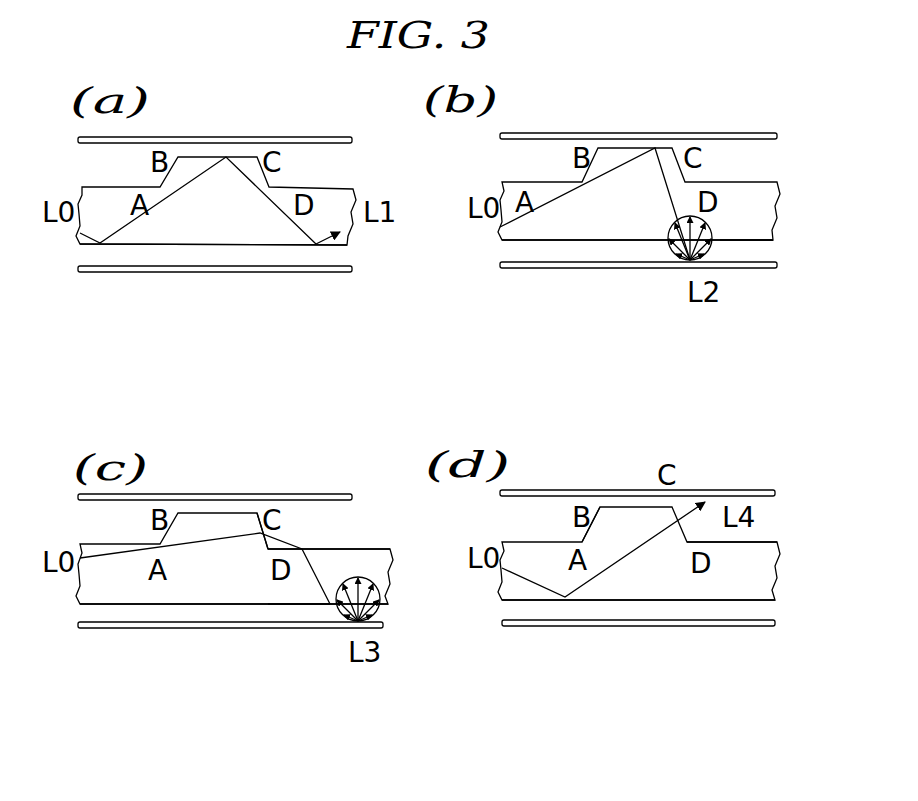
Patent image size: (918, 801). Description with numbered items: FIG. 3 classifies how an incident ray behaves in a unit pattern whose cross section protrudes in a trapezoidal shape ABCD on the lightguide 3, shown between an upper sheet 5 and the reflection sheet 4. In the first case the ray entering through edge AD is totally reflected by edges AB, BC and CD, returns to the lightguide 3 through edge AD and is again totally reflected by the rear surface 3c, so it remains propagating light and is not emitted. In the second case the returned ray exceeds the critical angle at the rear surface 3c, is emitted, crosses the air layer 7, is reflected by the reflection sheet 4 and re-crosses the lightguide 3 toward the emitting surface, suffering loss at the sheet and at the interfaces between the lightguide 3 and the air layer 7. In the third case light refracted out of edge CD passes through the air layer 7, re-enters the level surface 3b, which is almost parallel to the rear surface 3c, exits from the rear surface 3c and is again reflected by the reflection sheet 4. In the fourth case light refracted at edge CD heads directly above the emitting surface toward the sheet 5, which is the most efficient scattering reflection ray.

The lightguide 3 is at (210, 225).
The level surface 3b is at (322, 548).
The rear surface 3c is at (185, 247).
The reflection sheet 4 is at (297, 275).
The diffuser sheet 5 is at (243, 132).
The air layer 7 is at (742, 245).